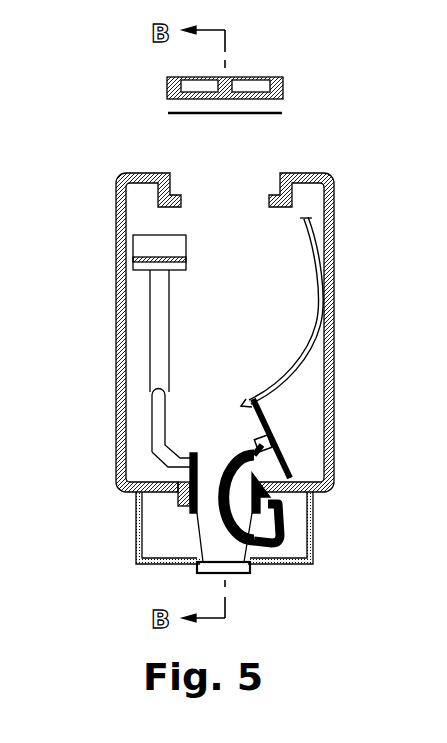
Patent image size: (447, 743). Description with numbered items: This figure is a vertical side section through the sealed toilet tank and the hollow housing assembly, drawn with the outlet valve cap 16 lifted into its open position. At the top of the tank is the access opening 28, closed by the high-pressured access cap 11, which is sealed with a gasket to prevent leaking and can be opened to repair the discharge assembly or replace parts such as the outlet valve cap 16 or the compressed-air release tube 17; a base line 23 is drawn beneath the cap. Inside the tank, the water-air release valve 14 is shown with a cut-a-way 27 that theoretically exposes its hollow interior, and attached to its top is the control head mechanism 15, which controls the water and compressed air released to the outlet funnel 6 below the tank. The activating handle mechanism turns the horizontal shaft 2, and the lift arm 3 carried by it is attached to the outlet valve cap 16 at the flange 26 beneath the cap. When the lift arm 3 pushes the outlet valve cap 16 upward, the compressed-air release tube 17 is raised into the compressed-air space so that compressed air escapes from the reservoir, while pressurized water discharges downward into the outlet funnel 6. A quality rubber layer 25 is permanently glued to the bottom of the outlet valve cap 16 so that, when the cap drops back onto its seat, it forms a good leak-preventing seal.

The horizontal shaft 2 is at (281, 373).
The lift arm 3 is at (272, 520).
The outlet funnel 6 is at (192, 527).
The high-pressured access cap 11 is at (278, 78).
The water-air release valve 14 is at (158, 318).
The control head mechanism 15 is at (143, 245).
The outlet valve cap 16 is at (252, 423).
The compressed-air release tube 17 is at (308, 223).
The base line 23 is at (282, 113).
The rubber layer 25 is at (243, 415).
The flange 26 is at (257, 442).
The cut-a-way 27 is at (157, 401).
The access opening 28 is at (215, 195).